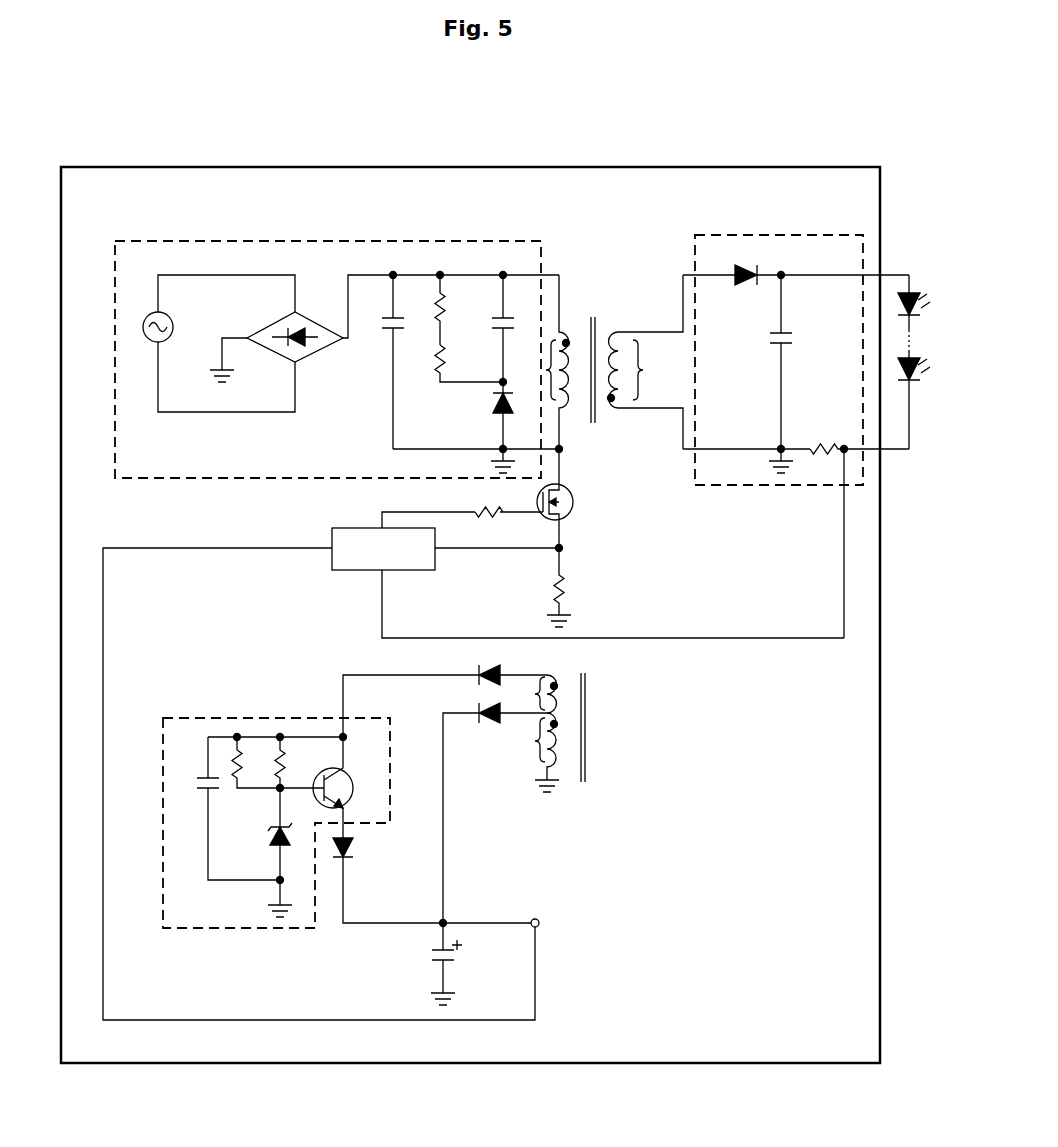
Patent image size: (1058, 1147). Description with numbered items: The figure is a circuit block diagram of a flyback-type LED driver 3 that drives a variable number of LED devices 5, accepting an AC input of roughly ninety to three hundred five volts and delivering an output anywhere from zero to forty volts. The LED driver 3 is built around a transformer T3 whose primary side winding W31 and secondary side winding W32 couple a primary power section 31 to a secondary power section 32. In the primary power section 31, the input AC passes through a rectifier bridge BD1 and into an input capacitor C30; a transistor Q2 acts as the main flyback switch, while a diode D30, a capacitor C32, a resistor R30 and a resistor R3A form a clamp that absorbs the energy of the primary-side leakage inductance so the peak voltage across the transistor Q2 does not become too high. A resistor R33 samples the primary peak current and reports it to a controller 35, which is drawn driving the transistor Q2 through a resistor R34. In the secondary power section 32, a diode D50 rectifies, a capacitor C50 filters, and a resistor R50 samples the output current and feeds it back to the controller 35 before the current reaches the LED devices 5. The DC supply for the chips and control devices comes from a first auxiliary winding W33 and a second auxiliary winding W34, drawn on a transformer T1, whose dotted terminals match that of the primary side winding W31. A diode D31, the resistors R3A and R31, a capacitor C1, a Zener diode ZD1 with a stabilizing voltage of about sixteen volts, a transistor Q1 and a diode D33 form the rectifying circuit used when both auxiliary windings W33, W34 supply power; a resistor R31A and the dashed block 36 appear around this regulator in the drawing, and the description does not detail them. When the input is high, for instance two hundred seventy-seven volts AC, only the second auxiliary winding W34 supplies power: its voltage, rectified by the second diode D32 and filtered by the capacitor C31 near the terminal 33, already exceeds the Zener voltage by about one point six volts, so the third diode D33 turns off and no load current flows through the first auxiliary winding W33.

The LED driver 3 is at (654, 170).
The primary power section 31 is at (384, 238).
The secondary power section 32 is at (784, 230).
The auxiliary power terminal 33 is at (540, 918).
The controller 35 is at (340, 572).
The voltage regulation block 36 is at (210, 715).
The LED devices 5 is at (913, 293).
The rectifier bridge BD1 is at (292, 336).
The input capacitor C30 is at (383, 362).
The resistor R30 is at (454, 310).
The resistor R3A is at (469, 363).
The capacitor C32 is at (515, 328).
The diode D30 is at (487, 415).
The transformer T3 is at (597, 362).
The primary side winding W31 is at (541, 362).
The secondary side winding W32 is at (646, 362).
The diode D50 is at (796, 267).
The capacitor C50 is at (792, 362).
The resistor R50 is at (856, 441).
The transistor Q2 is at (566, 498).
The gate resistor R34 is at (462, 509).
The resistor R33 is at (571, 587).
The diode D31 is at (445, 693).
The second diode D32 is at (495, 813).
The auxiliary transformer T1:3 T1 is at (565, 732).
The first auxiliary winding W33 is at (531, 694).
The second auxiliary winding W34 is at (532, 752).
The capacitor C1 is at (228, 808).
The resistor R31A is at (256, 762).
The resistor R31 is at (299, 762).
The Zener diode ZD1 is at (260, 852).
The transistor Q1 is at (342, 787).
The third diode D33 is at (432, 880).
The capacitor C31 is at (427, 964).